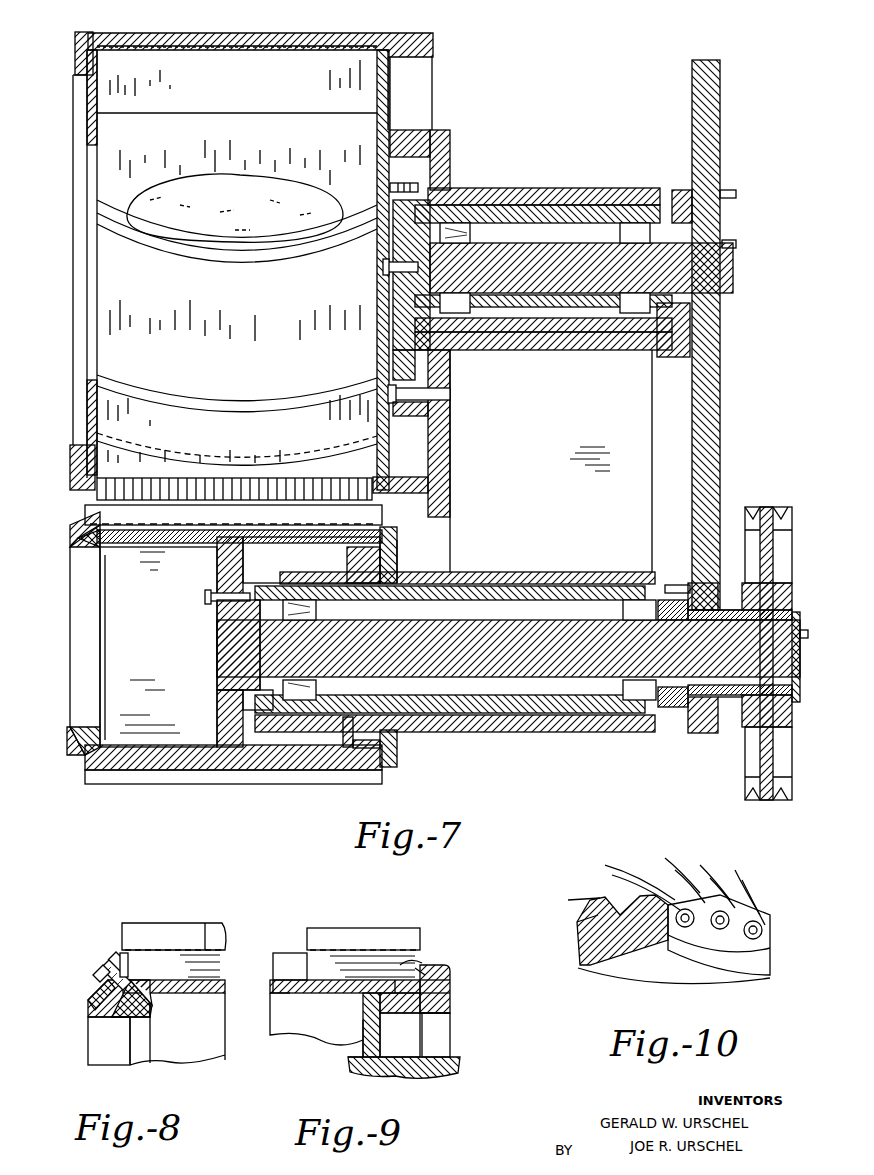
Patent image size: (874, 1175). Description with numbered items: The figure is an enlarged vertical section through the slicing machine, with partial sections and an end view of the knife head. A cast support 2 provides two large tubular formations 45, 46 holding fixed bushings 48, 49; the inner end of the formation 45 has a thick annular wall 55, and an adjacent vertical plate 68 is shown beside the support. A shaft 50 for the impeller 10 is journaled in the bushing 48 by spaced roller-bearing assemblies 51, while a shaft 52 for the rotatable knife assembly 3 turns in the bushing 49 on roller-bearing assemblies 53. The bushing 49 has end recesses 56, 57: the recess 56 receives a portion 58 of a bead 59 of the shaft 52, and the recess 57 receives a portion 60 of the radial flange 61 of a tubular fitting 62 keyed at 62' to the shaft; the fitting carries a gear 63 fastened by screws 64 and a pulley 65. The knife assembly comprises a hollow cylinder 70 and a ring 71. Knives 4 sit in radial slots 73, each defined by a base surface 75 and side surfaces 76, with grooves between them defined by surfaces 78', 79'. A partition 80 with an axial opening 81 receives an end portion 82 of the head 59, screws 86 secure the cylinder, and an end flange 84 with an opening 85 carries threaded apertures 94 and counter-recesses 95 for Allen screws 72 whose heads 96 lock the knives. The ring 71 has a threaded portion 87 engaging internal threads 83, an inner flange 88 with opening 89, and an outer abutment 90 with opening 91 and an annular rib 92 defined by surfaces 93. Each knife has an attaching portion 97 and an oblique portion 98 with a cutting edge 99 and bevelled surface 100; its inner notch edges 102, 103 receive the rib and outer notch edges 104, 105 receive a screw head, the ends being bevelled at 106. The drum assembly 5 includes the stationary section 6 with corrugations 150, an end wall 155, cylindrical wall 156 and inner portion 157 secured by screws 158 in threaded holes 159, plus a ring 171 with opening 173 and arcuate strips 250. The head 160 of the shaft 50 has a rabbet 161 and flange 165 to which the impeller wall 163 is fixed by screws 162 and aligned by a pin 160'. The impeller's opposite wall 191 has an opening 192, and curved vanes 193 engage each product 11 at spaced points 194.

In FIG. 7, the support 2 is at (644, 399).
In FIG. 7, the rotatable knife assembly 3 is at (63, 603).
In FIG. 7, the knives 4 is at (217, 560).
In FIG. 8, the knives 4 is at (168, 923).
In FIG. 9, the knives 4 is at (363, 952).
In FIG. 10, the knives 4 is at (667, 850).
In FIG. 7, the drum assembly 5 is at (137, 31).
In FIG. 7, the stationary section 6 is at (218, 39).
In FIG. 7, the impeller 10 is at (377, 77).
In FIG. 7, the product 11 is at (192, 175).
In FIG. 7, the tubular formation 45 is at (552, 188).
In FIG. 7, the tubular formation 46 is at (548, 572).
In FIG. 7, the bushing 48 is at (592, 205).
In FIG. 7, the bushing 49 is at (560, 590).
In FIG. 9, the bushing 49 is at (425, 1073).
In FIG. 7, the shaft 50 is at (534, 258).
In FIG. 7, the roller-bearing assemblies 51 is at (470, 238).
In FIG. 7, the shaft 52 is at (499, 617).
In FIG. 7, the roller-bearing assemblies 53 is at (318, 608).
In FIG. 7, the annular wall 55 is at (450, 370).
In FIG. 7, the internal annular recess 56 is at (295, 595).
In FIG. 7, the internal annular recess 57 is at (632, 600).
In FIG. 7, the portion of bead 58 is at (270, 695).
In FIG. 7, the bead 59 is at (262, 640).
In FIG. 7, the portion of radial flange 60 is at (675, 710).
In FIG. 7, the radial flange 61 is at (686, 710).
In FIG. 7, the tubular fitting 62 is at (757, 674).
In FIG. 7, the key 62' is at (791, 667).
In FIG. 7, the gear 63 is at (707, 733).
In FIG. 7, the screws 64 is at (672, 585).
In FIG. 7, the pulley 65 is at (742, 778).
In FIG. 7, the frame plate 68 is at (692, 93).
In FIG. 7, the hollow cylinder 70 is at (114, 555).
In FIG. 8, the hollow cylinder 70 is at (189, 994).
In FIG. 9, the hollow cylinder 70 is at (304, 993).
In FIG. 10, the hollow cylinder 70 is at (613, 955).
In FIG. 7, the ring 71 is at (397, 750).
In FIG. 9, the ring 71 is at (450, 1013).
In FIG. 7, the Allen screws 72 is at (72, 530).
In FIG. 8, the Allen screws 72 is at (145, 1010).
In FIG. 10, the Allen screws 72 is at (762, 930).
In FIG. 7, the radial slots 73 is at (214, 543).
In FIG. 9, the radial slots 73 is at (273, 966).
In FIG. 10, the radial slots 73 is at (578, 918).
In FIG. 9, the base surface 75 is at (273, 975).
In FIG. 10, the base surface 75 is at (585, 950).
In FIG. 9, the side surfaces 76 is at (303, 953).
In FIG. 10, the side surfaces 76 is at (580, 928).
In FIG. 10, the planar surface 78' is at (760, 891).
In FIG. 10, the planar surface 79' is at (769, 902).
In FIG. 7, the internal transverse partition 80 is at (217, 700).
In FIG. 7, the axial opening 81 is at (220, 680).
In FIG. 7, the end portion 82 is at (222, 627).
In FIG. 9, the internal threads 83 is at (363, 1006).
In FIG. 7, the outer annular end flange 84 is at (70, 548).
In FIG. 8, the outer annular end flange 84 is at (88, 995).
In FIG. 7, the opening 85 is at (70, 635).
In FIG. 8, the opening 85 is at (88, 1043).
In FIG. 7, the screws 86 is at (210, 597).
In FIG. 9, the externally threaded cylindrical portion 87 is at (400, 1035).
In FIG. 7, the inner radial end flange 88 is at (340, 565).
In FIG. 9, the inner radial end flange 88 is at (363, 1022).
In FIG. 7, the opening 89 is at (345, 717).
In FIG. 9, the opening 89 is at (358, 1057).
In FIG. 7, the outer radial end flange 90 is at (397, 540).
In FIG. 9, the outer radial end flange 90 is at (450, 1000).
In FIG. 9, the opening 91 is at (440, 1043).
In FIG. 7, the annular rib 92 is at (385, 526).
In FIG. 9, the annular rib 92 is at (448, 967).
In FIG. 7, the angularly disposed surfaces 93 is at (363, 565).
In FIG. 9, the angularly disposed surfaces 93 is at (425, 970).
In FIG. 7, the threaded apertures 94 is at (70, 570).
In FIG. 8, the threaded apertures 94 is at (126, 1022).
In FIG. 8, the counter-recesses 95 is at (88, 1008).
In FIG. 8, the heads 96 is at (100, 975).
In FIG. 10, the heads 96 is at (720, 935).
In FIG. 7, the attaching portion 97 is at (399, 570).
In FIG. 8, the attaching portion 97 is at (206, 950).
In FIG. 10, the cutting portion 98 is at (702, 855).
In FIG. 8, the cutting edge 99 is at (200, 923).
In FIG. 10, the cutting edge 99 is at (612, 868).
In FIG. 8, the bevelled planar surface 100 is at (143, 923).
In FIG. 9, the notch edge 102 is at (420, 965).
In FIG. 9, the notch edge 103 is at (413, 982).
In FIG. 8, the notch edge 104 is at (116, 952).
In FIG. 8, the notch edge 105 is at (128, 965).
In FIG. 8, the bevelled ends 106 is at (100, 970).
In FIG. 9, the bevelled ends 106 is at (450, 983).
In FIG. 7, the corrugations 150 is at (233, 52).
In FIG. 7, the end wall 155 is at (432, 104).
In FIG. 7, the cylindrical wall 156 is at (424, 50).
In FIG. 7, the inner annular portion 157 is at (430, 121).
In FIG. 7, the screws 158 is at (440, 432).
In FIG. 7, the threaded holes 159 is at (448, 410).
In FIG. 7, the head 160 is at (380, 275).
In FIG. 7, the pin 160' is at (371, 270).
In FIG. 7, the annular rabbet 161 is at (450, 178).
In FIG. 7, the screws 162 is at (390, 189).
In FIG. 7, the inner end wall 163 is at (388, 132).
In FIG. 7, the radial flange 165 is at (393, 356).
In FIG. 7, the outer annular ring 171 is at (78, 31).
In FIG. 7, the opening 173 is at (73, 100).
In FIG. 7, the opposite wall 191 is at (100, 73).
In FIG. 7, the opening 192 is at (97, 295).
In FIG. 7, the vanes 193 is at (303, 104).
In FIG. 7, the longitudinally spaced points 194 is at (161, 254).
In FIG. 7, the arcuate strips 250 is at (362, 480).